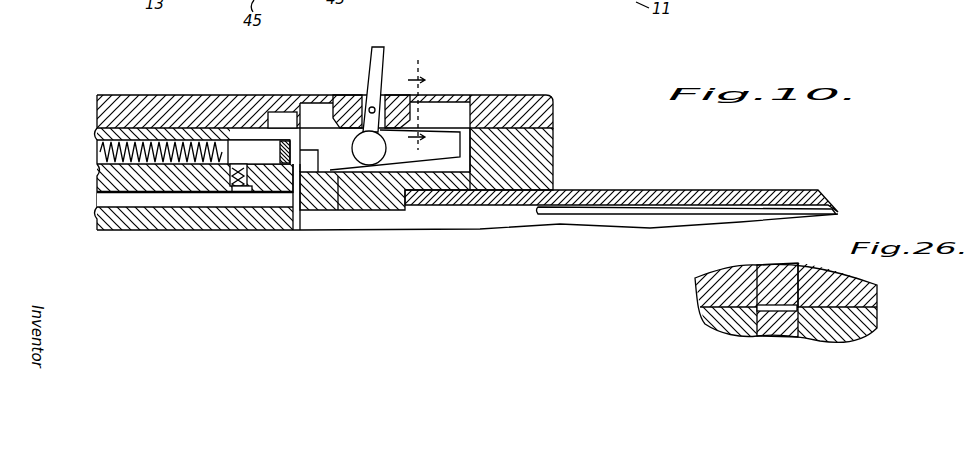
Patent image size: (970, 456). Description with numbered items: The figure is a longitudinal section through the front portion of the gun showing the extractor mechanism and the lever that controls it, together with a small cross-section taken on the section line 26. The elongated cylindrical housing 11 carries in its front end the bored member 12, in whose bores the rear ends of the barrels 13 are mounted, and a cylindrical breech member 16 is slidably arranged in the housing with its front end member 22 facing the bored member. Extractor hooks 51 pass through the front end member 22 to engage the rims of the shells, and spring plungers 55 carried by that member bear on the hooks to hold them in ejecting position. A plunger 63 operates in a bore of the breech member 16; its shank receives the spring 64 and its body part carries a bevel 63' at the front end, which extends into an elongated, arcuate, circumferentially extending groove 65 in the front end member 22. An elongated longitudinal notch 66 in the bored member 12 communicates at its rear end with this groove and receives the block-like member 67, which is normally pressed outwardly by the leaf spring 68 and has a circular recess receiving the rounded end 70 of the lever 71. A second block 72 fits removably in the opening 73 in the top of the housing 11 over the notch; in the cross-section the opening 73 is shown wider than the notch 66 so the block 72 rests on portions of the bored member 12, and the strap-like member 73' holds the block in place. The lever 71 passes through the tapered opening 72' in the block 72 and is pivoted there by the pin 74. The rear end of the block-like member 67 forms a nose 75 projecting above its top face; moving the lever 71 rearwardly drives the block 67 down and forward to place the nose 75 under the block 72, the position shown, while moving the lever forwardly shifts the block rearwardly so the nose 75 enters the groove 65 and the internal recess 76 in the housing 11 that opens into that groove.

In FIG. 10, the cylindrical housing 11 is at (196, 96).
In FIG. 26, the cylindrical housing 11 is at (878, 309).
In FIG. 10, the bored member 12 is at (555, 158).
In FIG. 26, the bored member 12 is at (735, 332).
In FIG. 10, the barrels 13 is at (652, 190).
In FIG. 10, the breech member 16 is at (105, 183).
In FIG. 10, the front end member 22 is at (133, 222).
In FIG. 10, the section line 26 is at (395, 110).
In FIG. 10, the extractor hooks 51 is at (190, 200).
In FIG. 10, the spring plungers 55 is at (238, 188).
In FIG. 10, the plunger 63 is at (262, 110).
In FIG. 10, the bevel 63' is at (315, 86).
In FIG. 10, the spring 64 is at (97, 152).
In FIG. 10, the groove 65 is at (276, 192).
In FIG. 10, the notch 66 is at (500, 95).
In FIG. 26, the notch 66 is at (818, 342).
In FIG. 10, the block-like member 67 is at (446, 140).
In FIG. 26, the block-like member 67 is at (778, 338).
In FIG. 10, the leaf spring 68 is at (338, 195).
In FIG. 10, the rounded end 70 is at (364, 149).
In FIG. 10, the lever 71 is at (380, 46).
In FIG. 10, the block 72 is at (347, 97).
In FIG. 26, the block 72 is at (777, 272).
In FIG. 10, the opening 72' is at (400, 88).
In FIG. 10, the opening 73 is at (308, 76).
In FIG. 26, the opening 73 is at (837, 272).
In FIG. 10, the strap-like member 73' is at (455, 59).
In FIG. 10, the pin 74 is at (350, 50).
In FIG. 10, the nose 75 is at (322, 122).
In FIG. 10, the internal recess 76 is at (263, 128).